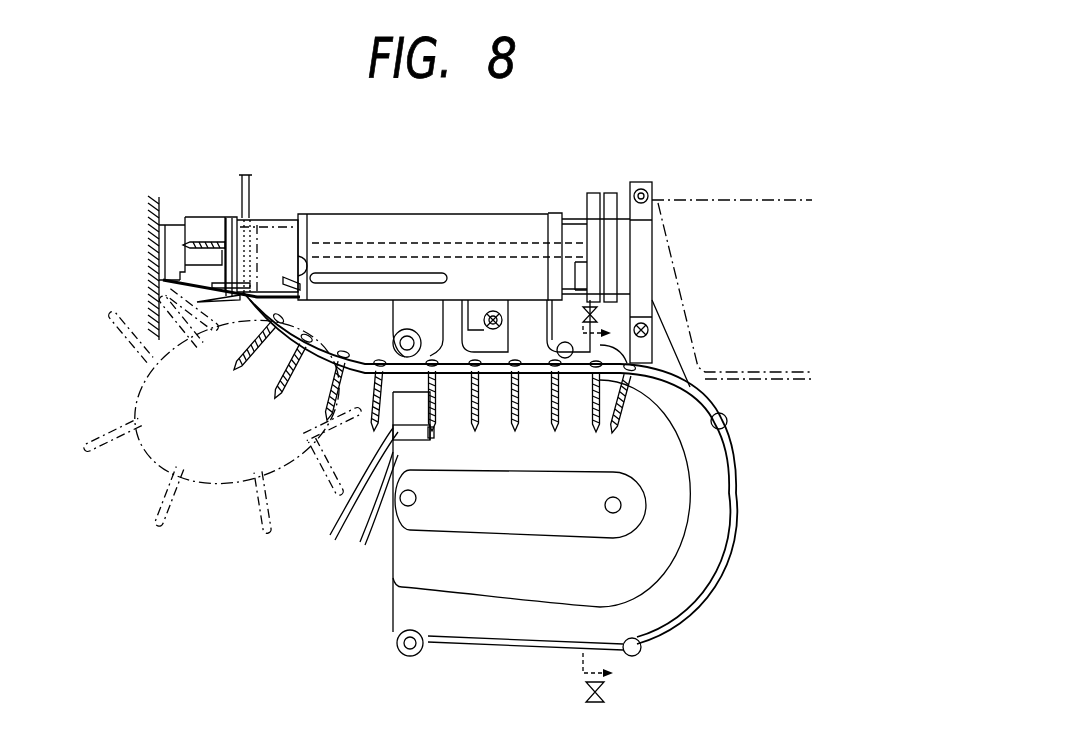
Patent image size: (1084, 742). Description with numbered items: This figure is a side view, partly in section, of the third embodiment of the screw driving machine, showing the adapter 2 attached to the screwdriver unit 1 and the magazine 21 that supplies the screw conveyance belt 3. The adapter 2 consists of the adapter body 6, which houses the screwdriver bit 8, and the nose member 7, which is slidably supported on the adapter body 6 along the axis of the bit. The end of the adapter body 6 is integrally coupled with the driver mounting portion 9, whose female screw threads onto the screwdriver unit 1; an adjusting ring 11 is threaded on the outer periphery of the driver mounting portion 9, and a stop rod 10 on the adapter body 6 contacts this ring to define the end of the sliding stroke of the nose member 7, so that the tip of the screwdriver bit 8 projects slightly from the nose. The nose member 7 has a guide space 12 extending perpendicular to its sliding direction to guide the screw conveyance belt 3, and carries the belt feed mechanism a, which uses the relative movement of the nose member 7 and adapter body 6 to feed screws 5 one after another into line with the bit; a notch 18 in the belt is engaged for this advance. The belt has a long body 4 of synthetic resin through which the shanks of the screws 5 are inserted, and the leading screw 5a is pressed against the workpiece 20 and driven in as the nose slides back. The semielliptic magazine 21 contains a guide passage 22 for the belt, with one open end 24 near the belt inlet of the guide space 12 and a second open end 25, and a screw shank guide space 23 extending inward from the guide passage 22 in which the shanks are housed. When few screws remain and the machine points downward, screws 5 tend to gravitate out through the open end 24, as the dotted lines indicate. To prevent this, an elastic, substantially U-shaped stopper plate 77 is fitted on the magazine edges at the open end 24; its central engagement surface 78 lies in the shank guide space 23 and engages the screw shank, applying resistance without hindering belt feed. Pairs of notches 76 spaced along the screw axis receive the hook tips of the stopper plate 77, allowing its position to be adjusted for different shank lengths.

The screwdriver unit 1 is at (708, 200).
The adapter 2 is at (498, 211).
The screw conveyance belt 3 is at (324, 369).
The long body 4 is at (288, 336).
The screws 5 is at (292, 362).
The leading screw 5a is at (203, 242).
The adapter body 6 is at (550, 213).
The nose member 7 is at (265, 216).
The screwdriver bit 8 is at (430, 240).
The driver mounting portion 9 is at (622, 200).
The stop rod 10 is at (553, 302).
The adjusting ring 11 is at (592, 193).
The guide space 12 is at (275, 296).
The notch 18 is at (362, 332).
The workpiece 20 is at (160, 200).
The magazine 21 is at (470, 647).
The guide passage 22 is at (456, 385).
The screw shank guide space 23 is at (523, 453).
The open end 24 is at (330, 456).
The second open end 25 is at (400, 615).
The notches 76 is at (440, 438).
The stopper plate 77 is at (380, 470).
The engagement surface 78 is at (400, 472).
The screw conveyance belt feed mechanism a is at (283, 208).